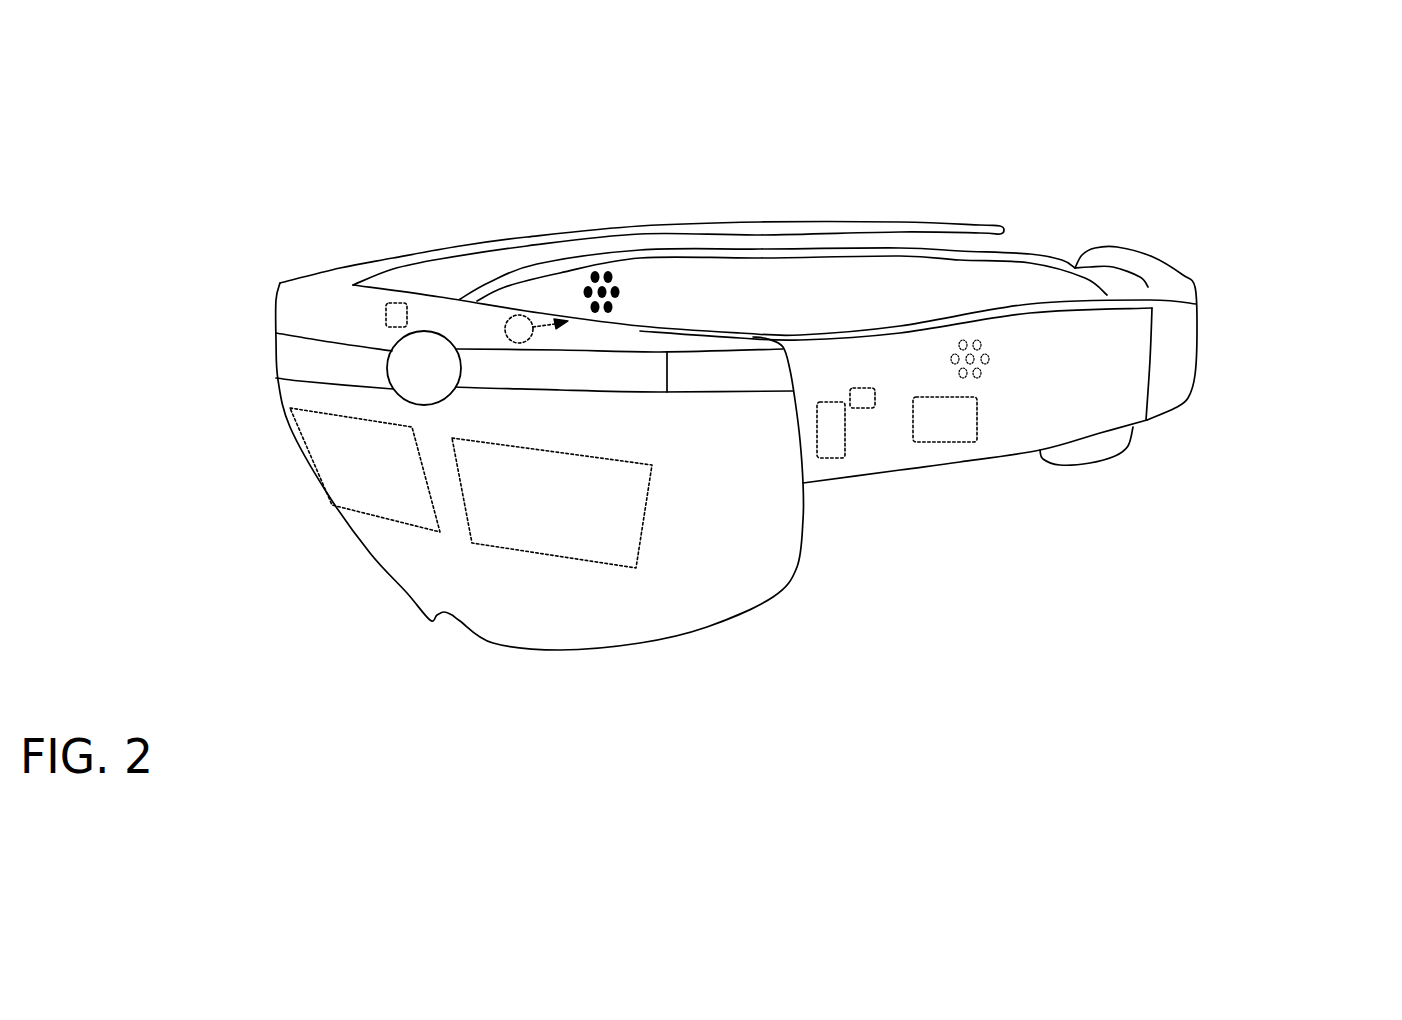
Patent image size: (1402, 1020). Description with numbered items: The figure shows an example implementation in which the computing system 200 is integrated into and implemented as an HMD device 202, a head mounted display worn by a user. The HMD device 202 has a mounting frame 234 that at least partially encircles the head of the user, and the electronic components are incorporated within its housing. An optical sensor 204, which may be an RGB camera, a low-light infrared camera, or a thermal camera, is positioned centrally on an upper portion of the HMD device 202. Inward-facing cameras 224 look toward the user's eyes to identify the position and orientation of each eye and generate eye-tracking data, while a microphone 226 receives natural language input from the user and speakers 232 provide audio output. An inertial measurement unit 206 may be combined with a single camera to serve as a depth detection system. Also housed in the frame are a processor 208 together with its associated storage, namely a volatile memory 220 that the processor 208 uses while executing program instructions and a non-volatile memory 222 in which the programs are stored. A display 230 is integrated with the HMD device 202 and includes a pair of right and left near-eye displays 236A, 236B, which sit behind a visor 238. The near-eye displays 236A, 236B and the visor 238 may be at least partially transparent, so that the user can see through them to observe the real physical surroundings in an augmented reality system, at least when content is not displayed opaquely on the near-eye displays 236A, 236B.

The computing system 200 is at (1022, 180).
The HMD device 202 is at (1210, 298).
The optical sensor 204 is at (276, 378).
The inertial measurement unit (IMU) 206 is at (900, 370).
The processor 208 is at (829, 458).
The volatile memory 220 is at (977, 425).
The non-volatile memory 222 is at (945, 419).
The inward-facing cameras 224 is at (526, 316).
The microphone 226 is at (397, 303).
The display 230 is at (582, 652).
The speakers 232 is at (627, 290).
The mounting frame 234 is at (1018, 455).
The right near-eye display 236A is at (407, 523).
The left near-eye display 236B is at (492, 580).
The visor 238 is at (377, 582).